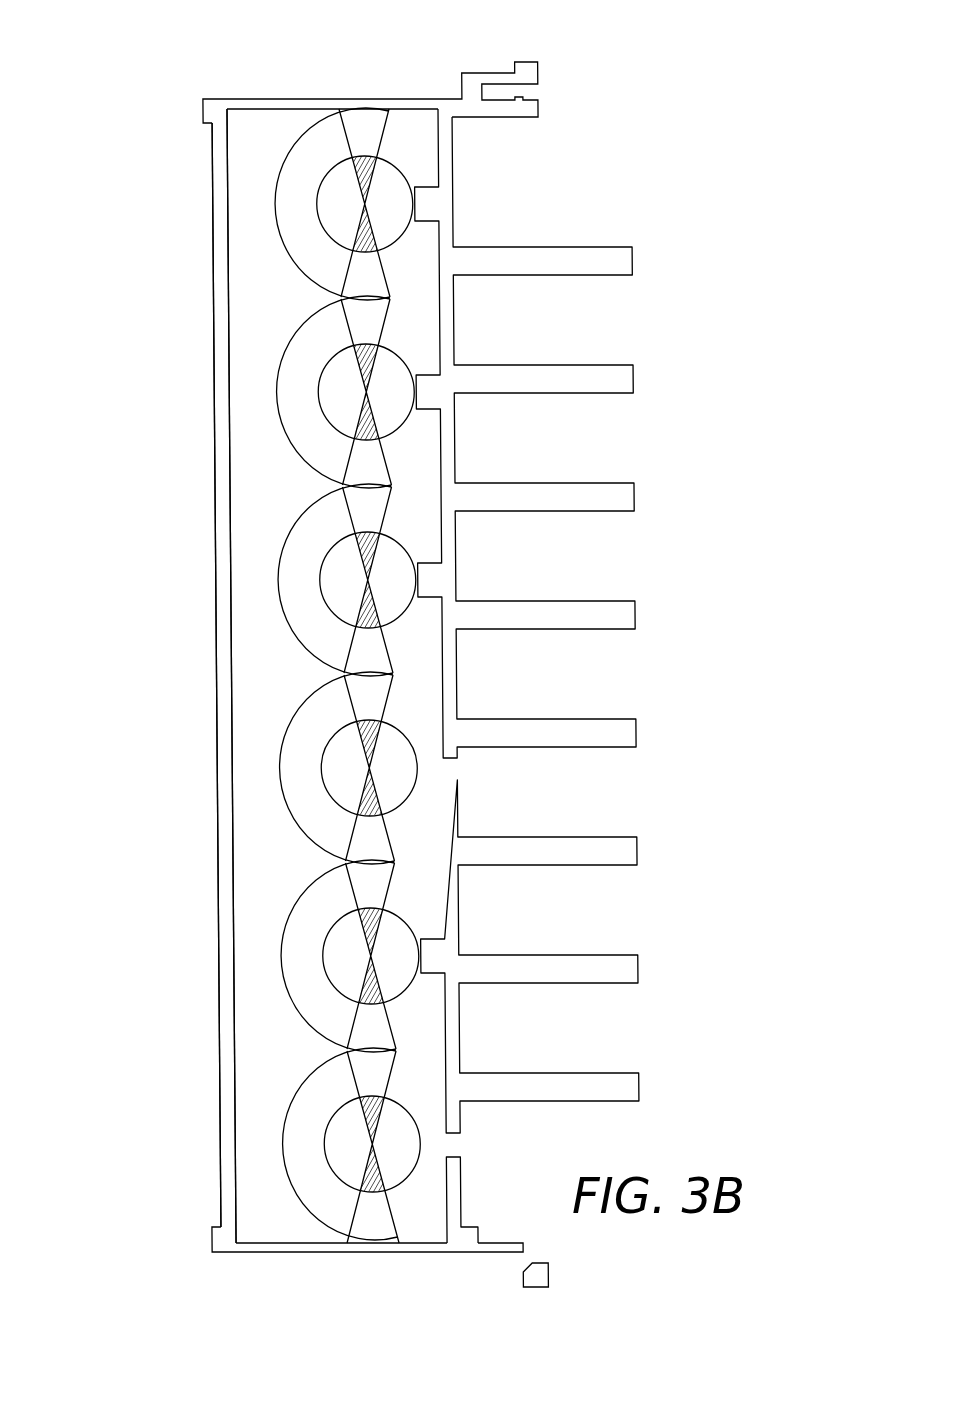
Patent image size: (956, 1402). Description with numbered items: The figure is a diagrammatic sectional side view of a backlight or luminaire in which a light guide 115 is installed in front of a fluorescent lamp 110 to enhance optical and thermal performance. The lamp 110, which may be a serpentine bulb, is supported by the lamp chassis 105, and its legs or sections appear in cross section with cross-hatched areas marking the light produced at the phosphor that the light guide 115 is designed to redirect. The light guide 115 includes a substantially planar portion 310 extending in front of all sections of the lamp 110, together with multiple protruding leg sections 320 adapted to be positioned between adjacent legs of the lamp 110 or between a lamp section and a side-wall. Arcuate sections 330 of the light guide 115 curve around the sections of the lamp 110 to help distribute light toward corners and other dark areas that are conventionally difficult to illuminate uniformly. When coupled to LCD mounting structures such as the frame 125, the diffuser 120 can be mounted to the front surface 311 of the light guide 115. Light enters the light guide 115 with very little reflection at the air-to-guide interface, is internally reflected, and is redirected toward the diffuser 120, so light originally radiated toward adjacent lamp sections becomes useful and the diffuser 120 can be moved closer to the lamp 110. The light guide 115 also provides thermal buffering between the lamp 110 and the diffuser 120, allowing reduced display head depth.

The lamp chassis 105 is at (597, 256).
The lamp 110 is at (403, 174).
The light guide 115 is at (268, 125).
The diffuser 120 is at (225, 1200).
The liquid crystal display frame 125 is at (400, 101).
The substantially planar portion 310 is at (260, 688).
The front surface 311 is at (228, 830).
The protruding leg sections 320 is at (388, 297).
The arcuate sections 330 is at (285, 440).